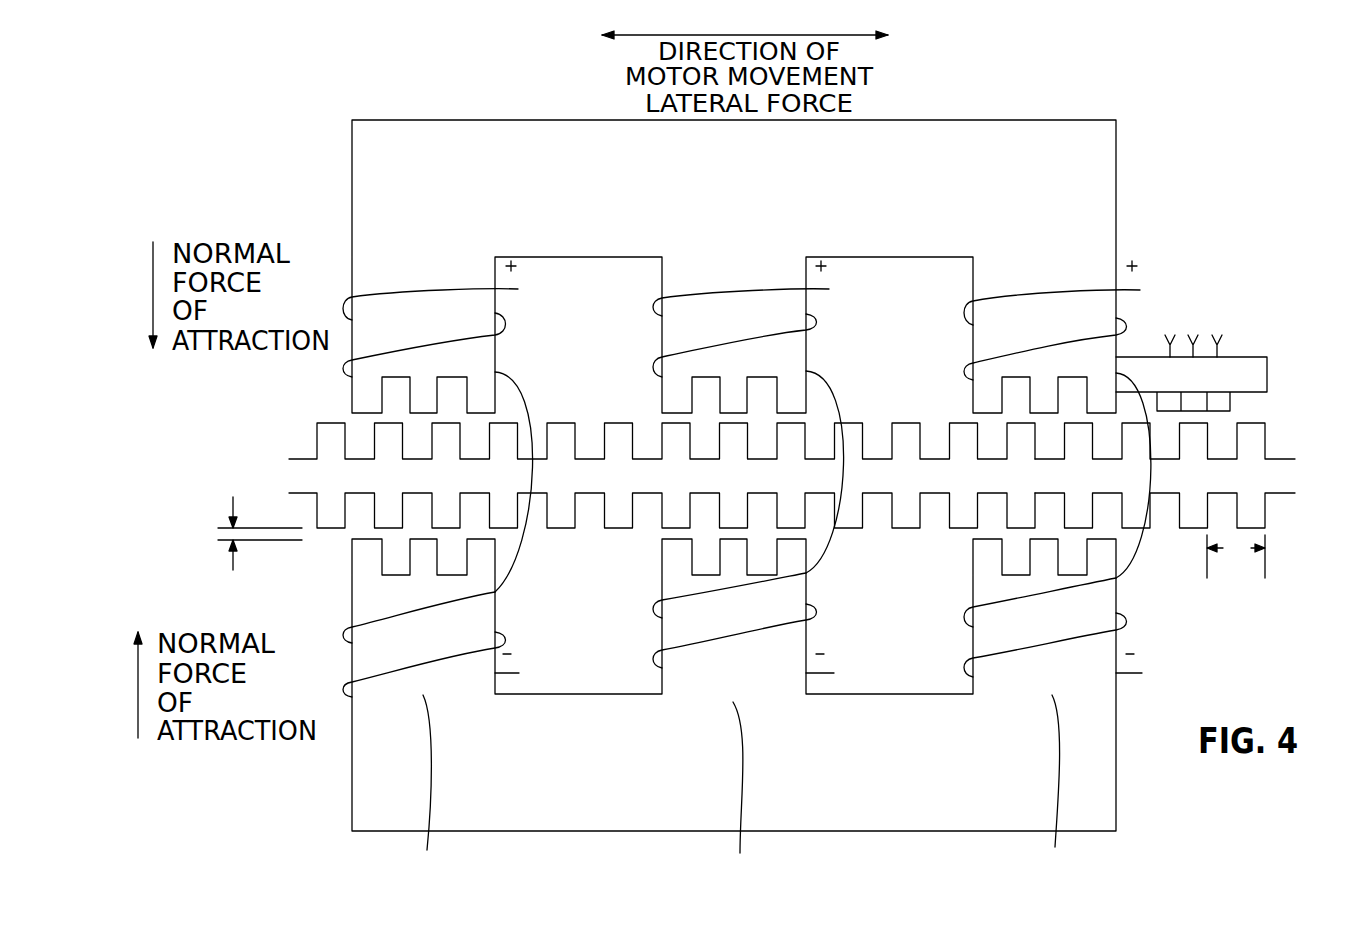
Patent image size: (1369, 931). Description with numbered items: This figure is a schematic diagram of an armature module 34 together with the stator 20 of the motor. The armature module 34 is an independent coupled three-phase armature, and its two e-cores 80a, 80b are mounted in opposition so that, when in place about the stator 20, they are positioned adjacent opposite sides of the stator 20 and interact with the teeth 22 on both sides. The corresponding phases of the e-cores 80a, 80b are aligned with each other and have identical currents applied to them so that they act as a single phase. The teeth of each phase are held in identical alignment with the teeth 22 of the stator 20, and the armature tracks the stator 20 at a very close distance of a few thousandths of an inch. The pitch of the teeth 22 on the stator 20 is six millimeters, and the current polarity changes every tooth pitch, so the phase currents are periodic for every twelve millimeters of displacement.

The armature module 34 is at (278, 137).
The e-core 80a is at (1105, 163).
The e-core 80b is at (1105, 798).
The stator 20 is at (819, 488).
The teeth 22 is at (1247, 437).